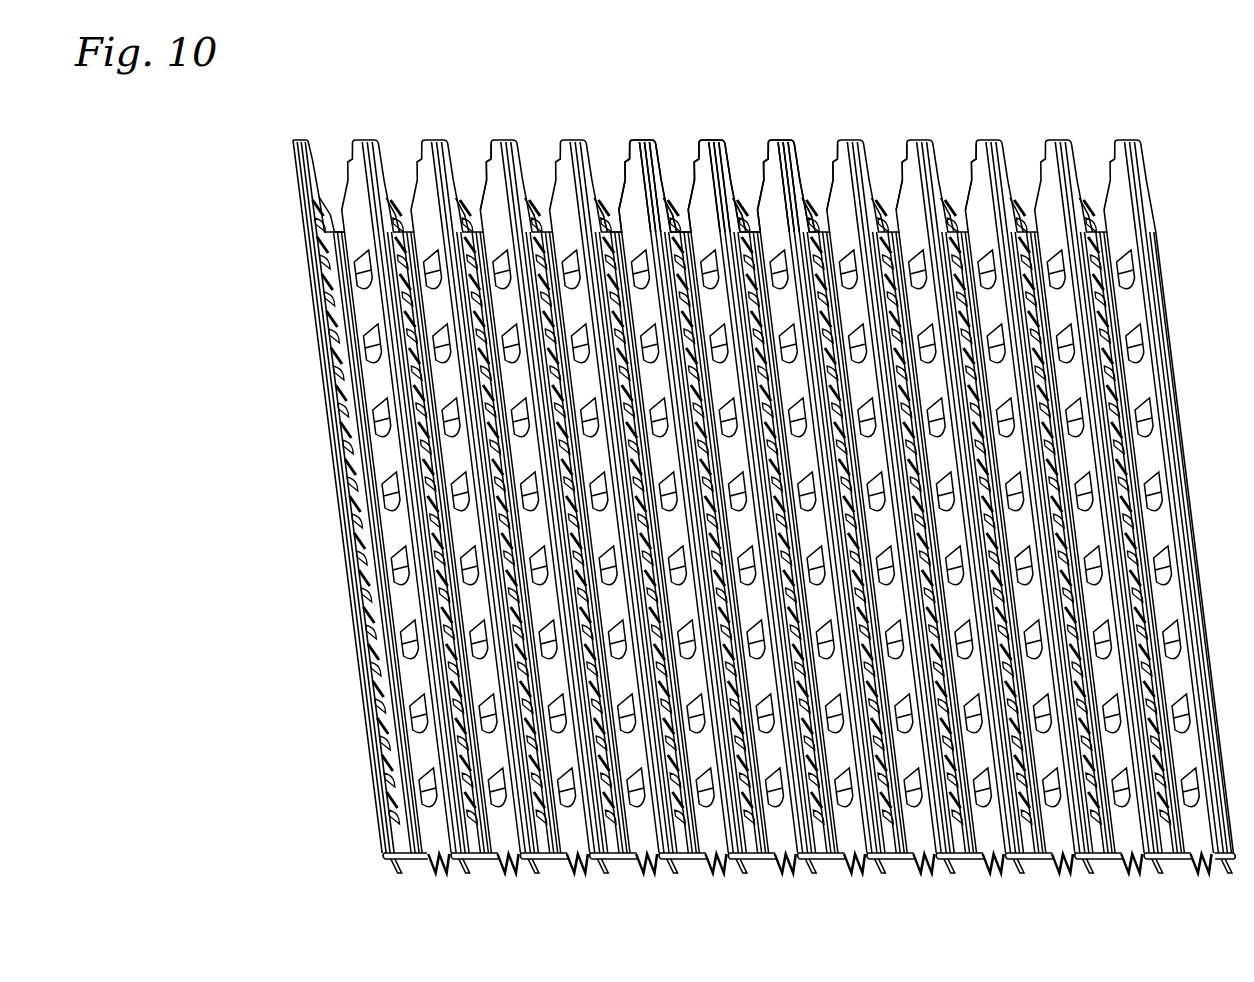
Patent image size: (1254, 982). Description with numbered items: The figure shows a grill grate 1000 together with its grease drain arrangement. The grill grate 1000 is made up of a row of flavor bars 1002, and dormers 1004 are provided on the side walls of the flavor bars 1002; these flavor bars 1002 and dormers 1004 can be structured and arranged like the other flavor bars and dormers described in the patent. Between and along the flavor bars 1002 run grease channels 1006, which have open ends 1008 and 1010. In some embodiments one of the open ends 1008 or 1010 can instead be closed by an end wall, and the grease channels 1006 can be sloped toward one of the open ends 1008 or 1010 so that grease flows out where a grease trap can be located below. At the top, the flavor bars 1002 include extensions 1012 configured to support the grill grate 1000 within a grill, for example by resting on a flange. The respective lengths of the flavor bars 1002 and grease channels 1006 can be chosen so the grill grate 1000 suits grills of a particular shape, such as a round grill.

The grill grate 1000 is at (280, 338).
The flavor bars 1002 is at (1073, 173).
The dormers 1004 is at (608, 220).
The grease channels 1006 is at (690, 840).
The open end 1008 is at (967, 227).
The open end 1010 is at (1112, 863).
The extensions 1012 is at (787, 140).